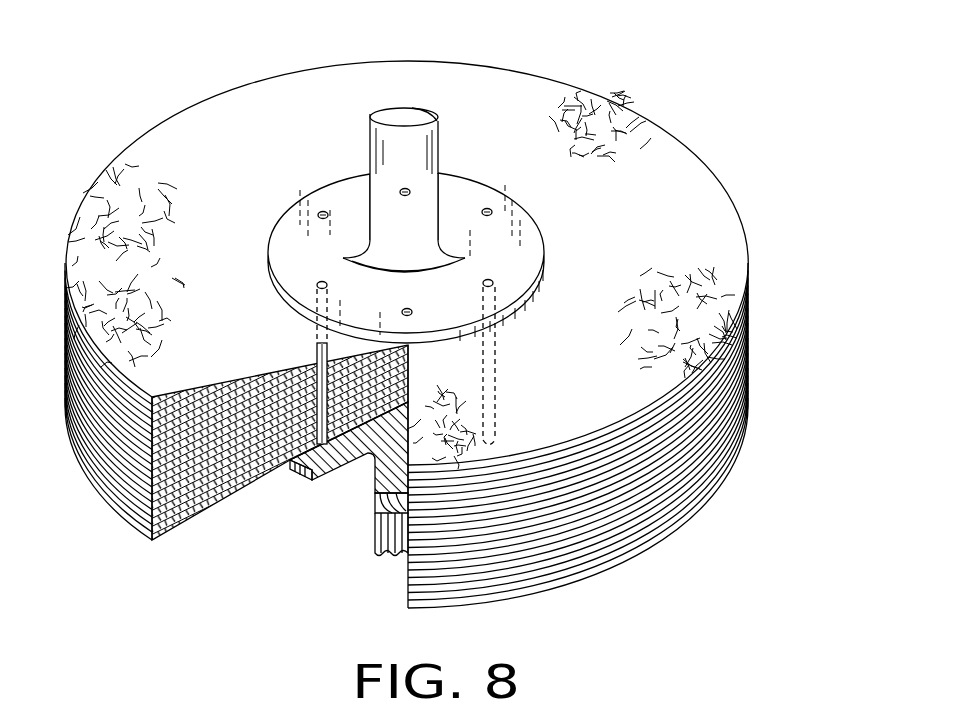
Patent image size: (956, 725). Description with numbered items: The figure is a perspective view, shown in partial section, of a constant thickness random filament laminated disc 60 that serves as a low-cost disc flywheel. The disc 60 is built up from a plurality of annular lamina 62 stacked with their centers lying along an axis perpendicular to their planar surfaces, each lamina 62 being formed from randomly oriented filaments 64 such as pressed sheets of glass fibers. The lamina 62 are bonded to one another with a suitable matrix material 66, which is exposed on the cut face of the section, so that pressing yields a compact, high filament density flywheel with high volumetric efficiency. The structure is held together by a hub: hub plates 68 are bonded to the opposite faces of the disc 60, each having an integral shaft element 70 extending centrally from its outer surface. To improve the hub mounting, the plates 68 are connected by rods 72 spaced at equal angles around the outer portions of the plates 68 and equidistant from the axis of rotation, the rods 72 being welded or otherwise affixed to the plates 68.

The random filament laminated disc 60 is at (675, 106).
The annular lamina 62 is at (152, 542).
The randomly oriented filaments 64 is at (746, 262).
The matrix material 66 is at (224, 352).
The hub plates 68 is at (520, 222).
The shaft elements 70 is at (438, 157).
The rods 72 is at (328, 330).